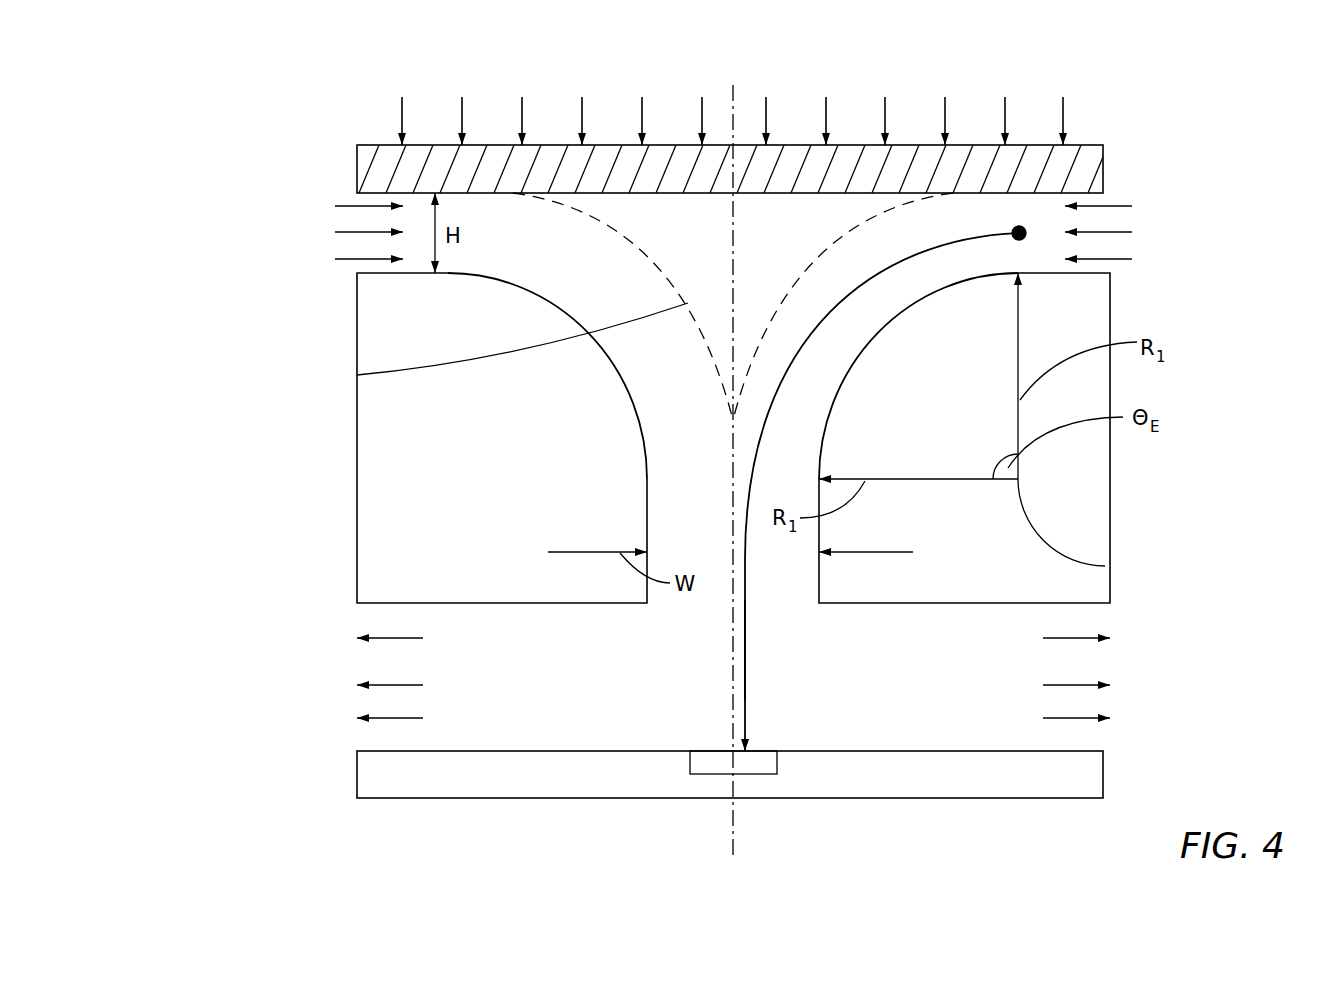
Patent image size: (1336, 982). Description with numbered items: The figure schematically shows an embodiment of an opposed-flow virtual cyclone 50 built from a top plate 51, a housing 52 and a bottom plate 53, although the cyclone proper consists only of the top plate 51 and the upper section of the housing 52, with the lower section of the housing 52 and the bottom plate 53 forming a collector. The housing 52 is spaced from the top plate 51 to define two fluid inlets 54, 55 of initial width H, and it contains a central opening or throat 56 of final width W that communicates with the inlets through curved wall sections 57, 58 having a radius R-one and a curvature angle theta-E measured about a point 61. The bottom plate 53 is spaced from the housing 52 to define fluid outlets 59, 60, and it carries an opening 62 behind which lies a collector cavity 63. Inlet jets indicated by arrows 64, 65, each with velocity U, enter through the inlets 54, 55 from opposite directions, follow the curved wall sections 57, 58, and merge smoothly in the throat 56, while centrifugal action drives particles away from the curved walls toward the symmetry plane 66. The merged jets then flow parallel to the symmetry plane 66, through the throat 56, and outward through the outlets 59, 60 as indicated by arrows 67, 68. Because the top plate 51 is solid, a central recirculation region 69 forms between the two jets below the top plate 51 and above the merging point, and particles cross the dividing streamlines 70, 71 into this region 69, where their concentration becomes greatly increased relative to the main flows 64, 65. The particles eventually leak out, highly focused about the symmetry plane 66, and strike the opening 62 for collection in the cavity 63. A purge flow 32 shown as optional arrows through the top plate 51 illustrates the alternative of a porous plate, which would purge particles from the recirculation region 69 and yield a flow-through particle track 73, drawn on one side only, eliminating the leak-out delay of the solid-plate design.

The purge flow 32 is at (797, 100).
The opposed-flow virtual cyclone 50 is at (1165, 115).
The top plate 51 is at (379, 145).
The housing 52 is at (357, 548).
The bottom plate 53 is at (1103, 778).
The fluid inlet 54 is at (1007, 220).
The fluid inlet 55 is at (495, 250).
The central opening or throat 56 is at (677, 532).
The curved wall section 57 is at (833, 412).
The curved wall section 58 is at (625, 393).
The fluid outlet 59 is at (937, 692).
The fluid outlet 60 is at (504, 692).
The point 61 is at (1105, 566).
The opening 62 is at (758, 752).
The collector cavity 63 is at (718, 762).
The inlet fluid flow 64 is at (1118, 232).
The inlet fluid flow 65 is at (343, 259).
The symmetry plane 66 is at (733, 823).
The outlet flow arrow 67 is at (1110, 718).
The outlet flow arrow 68 is at (357, 718).
The central recirculation region 69 is at (720, 295).
The dividing streamline 70 is at (820, 258).
The dividing streamline 71 is at (357, 375).
The flow-through particle track 73 is at (745, 707).